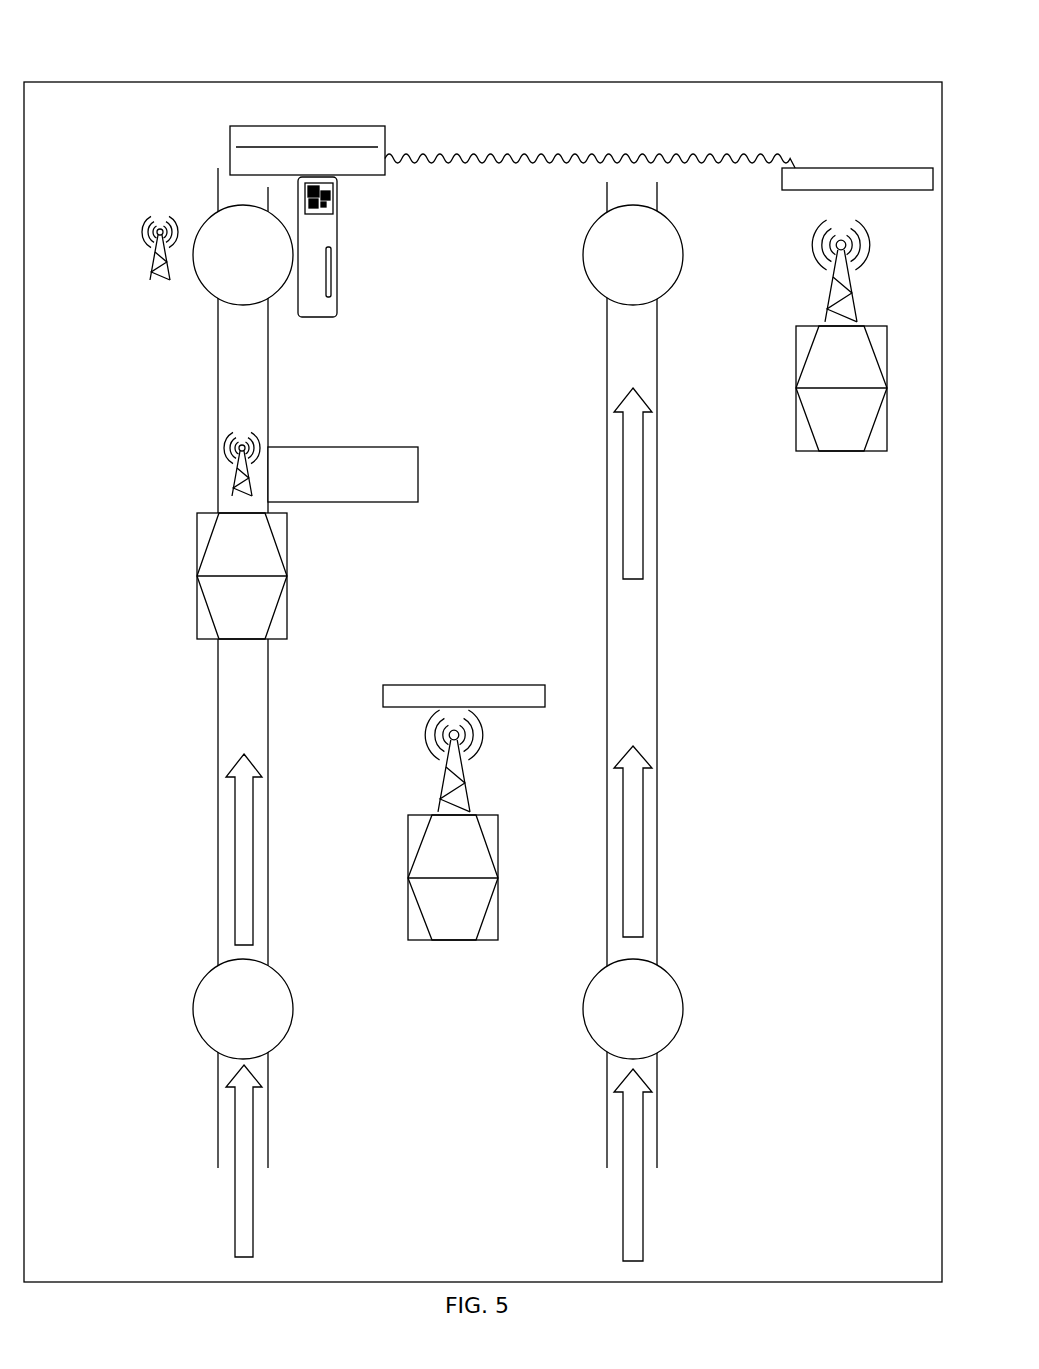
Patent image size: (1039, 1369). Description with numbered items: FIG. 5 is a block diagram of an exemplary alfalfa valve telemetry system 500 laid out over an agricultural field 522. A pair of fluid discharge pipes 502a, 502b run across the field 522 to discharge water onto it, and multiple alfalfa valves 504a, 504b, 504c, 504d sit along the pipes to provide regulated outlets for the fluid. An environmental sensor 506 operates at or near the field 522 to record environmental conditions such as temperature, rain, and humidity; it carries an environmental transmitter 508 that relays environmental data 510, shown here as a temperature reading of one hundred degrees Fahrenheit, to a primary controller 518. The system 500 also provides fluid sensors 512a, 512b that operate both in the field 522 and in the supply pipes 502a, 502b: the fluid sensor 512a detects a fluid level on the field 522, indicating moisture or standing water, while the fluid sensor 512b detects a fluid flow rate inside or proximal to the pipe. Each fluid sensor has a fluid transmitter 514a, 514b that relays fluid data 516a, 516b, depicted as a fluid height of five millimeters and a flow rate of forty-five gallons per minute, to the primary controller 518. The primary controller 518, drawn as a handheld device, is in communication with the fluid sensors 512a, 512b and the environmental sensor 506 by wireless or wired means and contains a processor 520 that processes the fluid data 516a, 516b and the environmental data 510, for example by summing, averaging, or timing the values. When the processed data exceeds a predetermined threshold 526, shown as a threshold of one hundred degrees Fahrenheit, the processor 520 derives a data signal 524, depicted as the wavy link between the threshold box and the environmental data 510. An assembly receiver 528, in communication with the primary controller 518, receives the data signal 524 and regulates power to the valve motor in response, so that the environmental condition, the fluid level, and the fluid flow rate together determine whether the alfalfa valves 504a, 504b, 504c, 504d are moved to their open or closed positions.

The alfalfa valve telemetry system 500 is at (86, 70).
The fluid discharge pipe 502a is at (218, 188).
The fluid discharge pipe 502b is at (607, 197).
The alfalfa valve 504a is at (224, 266).
The alfalfa valve 504b is at (224, 1020).
The alfalfa valve 504c is at (614, 266).
The alfalfa valve 504d is at (614, 1020).
The environmental sensor 506 is at (827, 379).
The environmental transmitter 508 is at (850, 303).
The environmental data 510 is at (857, 169).
The fluid sensor 512a is at (434, 869).
The fluid sensor 512b is at (223, 566).
The fluid transmitter 514a is at (457, 793).
The fluid transmitter 514b is at (233, 479).
The fluid data 516a is at (464, 684).
The fluid data 516b is at (343, 464).
The primary controller 518 is at (366, 247).
The processor 520 is at (333, 202).
The field 522 is at (63, 107).
The data signal 524 is at (640, 157).
The predetermined threshold 526 is at (307, 140).
The assembly receiver 528 is at (152, 244).